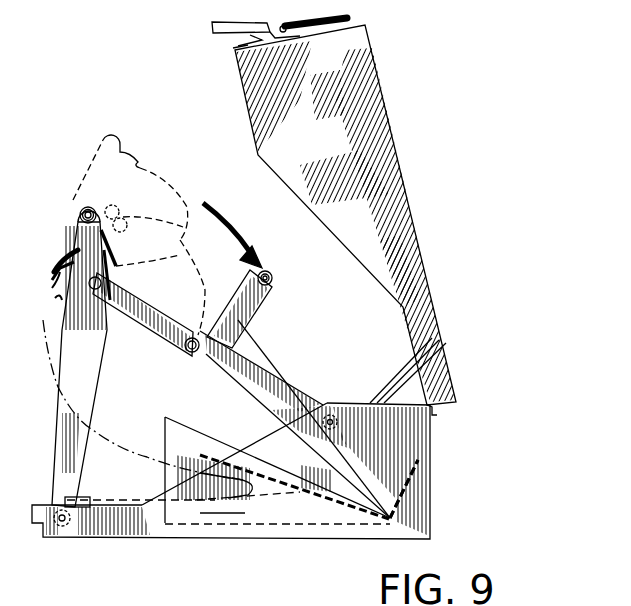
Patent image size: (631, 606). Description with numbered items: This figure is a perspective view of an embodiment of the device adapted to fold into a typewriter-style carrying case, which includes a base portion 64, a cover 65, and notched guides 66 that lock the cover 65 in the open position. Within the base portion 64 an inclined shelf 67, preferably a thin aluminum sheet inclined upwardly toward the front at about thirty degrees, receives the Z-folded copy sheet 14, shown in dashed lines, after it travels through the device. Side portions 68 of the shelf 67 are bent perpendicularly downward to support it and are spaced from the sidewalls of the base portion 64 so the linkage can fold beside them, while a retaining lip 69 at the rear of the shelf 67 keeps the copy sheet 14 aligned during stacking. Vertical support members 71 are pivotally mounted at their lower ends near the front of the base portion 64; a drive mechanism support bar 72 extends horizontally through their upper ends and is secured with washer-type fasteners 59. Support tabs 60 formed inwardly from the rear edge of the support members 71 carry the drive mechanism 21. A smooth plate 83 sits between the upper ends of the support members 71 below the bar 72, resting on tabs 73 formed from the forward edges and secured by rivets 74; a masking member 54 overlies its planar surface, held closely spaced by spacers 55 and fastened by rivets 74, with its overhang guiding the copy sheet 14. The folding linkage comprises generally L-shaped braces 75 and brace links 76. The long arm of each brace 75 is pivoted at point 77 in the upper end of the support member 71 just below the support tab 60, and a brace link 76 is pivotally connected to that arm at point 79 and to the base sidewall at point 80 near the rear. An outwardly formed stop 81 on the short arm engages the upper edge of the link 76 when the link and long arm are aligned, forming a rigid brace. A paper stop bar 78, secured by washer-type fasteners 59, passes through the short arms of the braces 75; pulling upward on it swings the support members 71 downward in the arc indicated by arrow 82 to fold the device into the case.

The Z-folded copy sheet 14 is at (50, 364).
The drive mechanism 21 is at (176, 192).
The masking member 54 is at (62, 258).
The spacers 55 is at (60, 268).
The washer-type fasteners 59 is at (78, 230).
The support tabs 60 is at (112, 264).
The base portion 64 is at (430, 505).
The cover 65 is at (332, 148).
The notched guides 66 is at (390, 386).
The inclined shelf 67 is at (167, 418).
The side portions 68 is at (197, 454).
The retaining lip 69 is at (402, 484).
The vertical support members 71 is at (90, 377).
The drive mechanism support bar 72 is at (80, 214).
The tabs 73 is at (66, 296).
The rivets 74 is at (52, 288).
The L-shaped braces 75 is at (155, 318).
The brace links 76 is at (272, 386).
The pivot point 77 is at (102, 283).
The paper stop bar 78 is at (271, 274).
The pivot point 79 is at (193, 352).
The pivot point 80 is at (330, 430).
The stop 81 is at (236, 347).
The arrow 82 is at (236, 208).
The smooth plate 83 is at (56, 298).